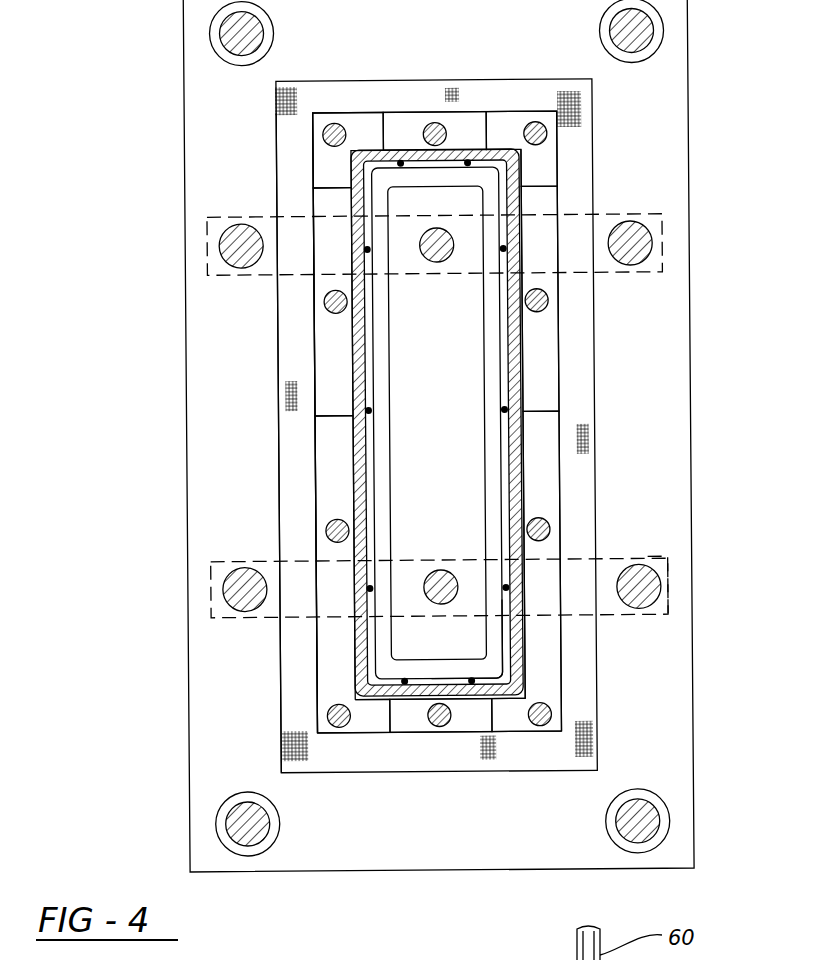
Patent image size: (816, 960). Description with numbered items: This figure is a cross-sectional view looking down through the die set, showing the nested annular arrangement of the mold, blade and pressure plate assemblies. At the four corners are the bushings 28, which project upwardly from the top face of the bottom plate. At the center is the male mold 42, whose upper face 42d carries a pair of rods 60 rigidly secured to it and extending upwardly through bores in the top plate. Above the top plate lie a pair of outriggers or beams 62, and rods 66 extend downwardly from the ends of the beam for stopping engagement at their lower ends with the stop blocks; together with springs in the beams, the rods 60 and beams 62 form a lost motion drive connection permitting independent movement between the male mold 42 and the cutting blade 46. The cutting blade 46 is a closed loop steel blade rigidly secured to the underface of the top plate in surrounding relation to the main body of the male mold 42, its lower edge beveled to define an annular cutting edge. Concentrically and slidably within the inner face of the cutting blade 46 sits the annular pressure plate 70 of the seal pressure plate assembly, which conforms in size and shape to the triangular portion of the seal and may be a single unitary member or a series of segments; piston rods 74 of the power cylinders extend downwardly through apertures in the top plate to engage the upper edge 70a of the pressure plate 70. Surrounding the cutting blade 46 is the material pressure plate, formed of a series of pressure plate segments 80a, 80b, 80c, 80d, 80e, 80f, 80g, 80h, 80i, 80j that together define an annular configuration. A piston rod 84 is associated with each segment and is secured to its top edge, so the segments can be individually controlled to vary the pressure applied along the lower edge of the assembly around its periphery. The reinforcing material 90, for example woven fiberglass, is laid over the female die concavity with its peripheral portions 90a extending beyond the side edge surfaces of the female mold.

The bushings 28 is at (210, 33).
The male mold 42 is at (402, 364).
The upper face of male mold 42d is at (459, 410).
The cutting blade 46 is at (520, 387).
The rods 60 is at (439, 263).
The outriggers or beams 62 is at (648, 558).
The rods 66 is at (221, 244).
The annular pressure plate 70 is at (496, 455).
The upper edge of annular pressure plate 70a is at (505, 636).
The piston rod 74 is at (533, 252).
The pressure plate segment 80a is at (372, 733).
The pressure plate segment 80b is at (318, 478).
The pressure plate segment 80c is at (314, 323).
The pressure plate segment 80d is at (314, 147).
The pressure plate segment 80e is at (425, 112).
The pressure plate segment 80f is at (540, 112).
The pressure plate segment 80g is at (561, 322).
The pressure plate segment 80h is at (561, 498).
The pressure plate segment 80i is at (565, 708).
The pressure plate segment 80j is at (470, 733).
The piston rod 84 is at (548, 141).
The reinforcing material sheet 90 is at (336, 751).
The peripheral portions of sheet 90a is at (307, 645).